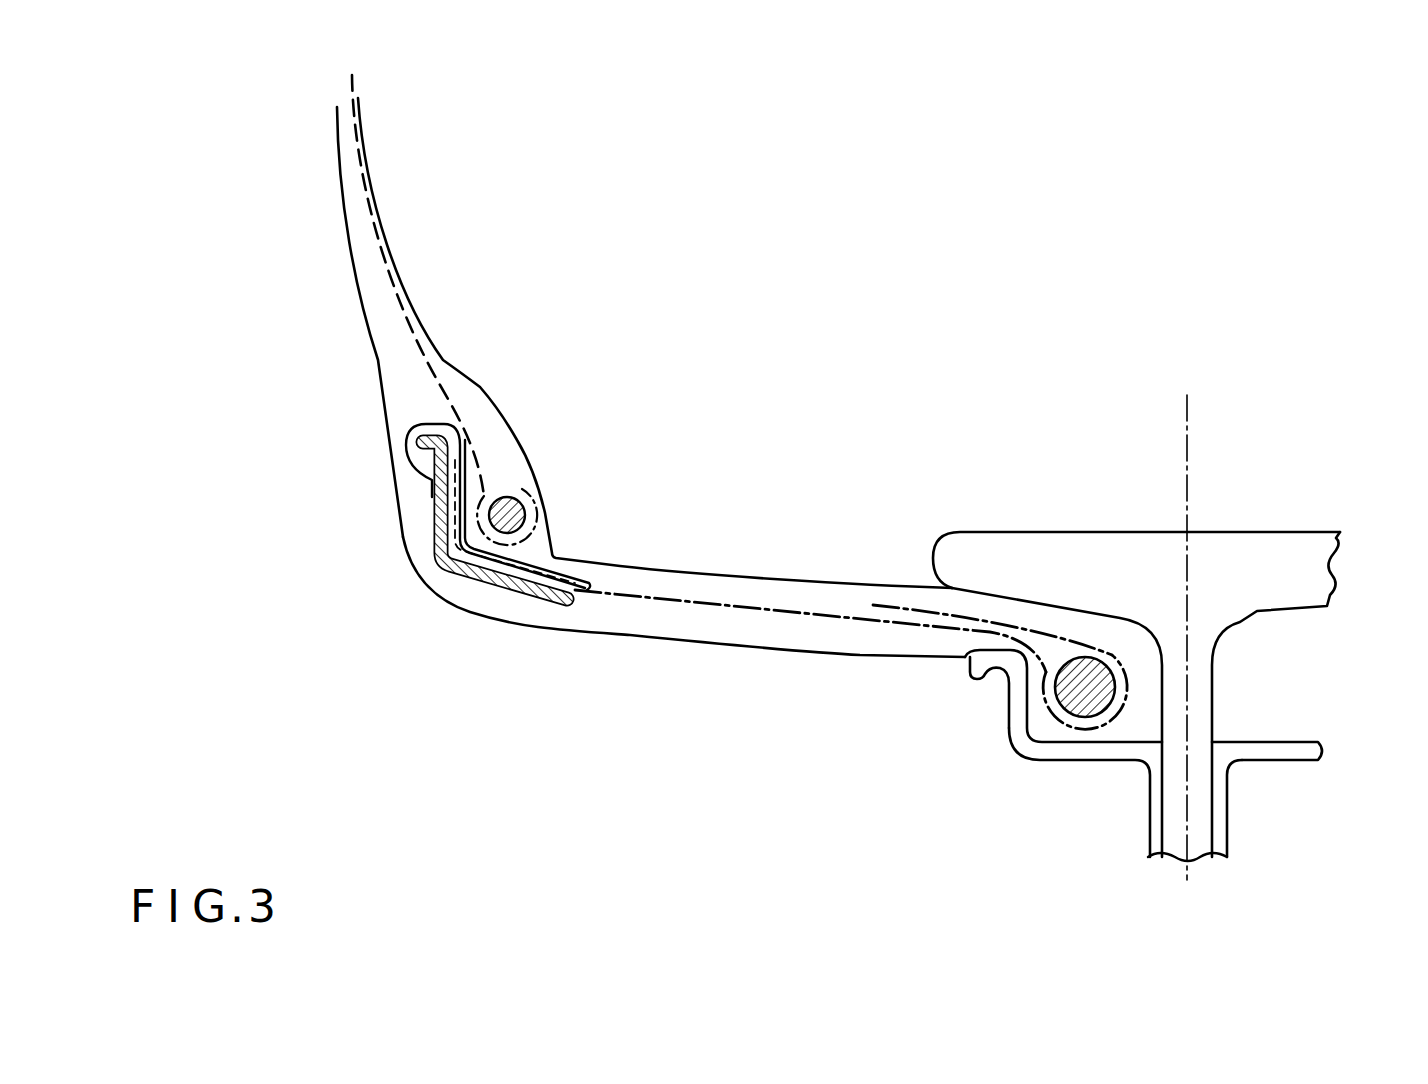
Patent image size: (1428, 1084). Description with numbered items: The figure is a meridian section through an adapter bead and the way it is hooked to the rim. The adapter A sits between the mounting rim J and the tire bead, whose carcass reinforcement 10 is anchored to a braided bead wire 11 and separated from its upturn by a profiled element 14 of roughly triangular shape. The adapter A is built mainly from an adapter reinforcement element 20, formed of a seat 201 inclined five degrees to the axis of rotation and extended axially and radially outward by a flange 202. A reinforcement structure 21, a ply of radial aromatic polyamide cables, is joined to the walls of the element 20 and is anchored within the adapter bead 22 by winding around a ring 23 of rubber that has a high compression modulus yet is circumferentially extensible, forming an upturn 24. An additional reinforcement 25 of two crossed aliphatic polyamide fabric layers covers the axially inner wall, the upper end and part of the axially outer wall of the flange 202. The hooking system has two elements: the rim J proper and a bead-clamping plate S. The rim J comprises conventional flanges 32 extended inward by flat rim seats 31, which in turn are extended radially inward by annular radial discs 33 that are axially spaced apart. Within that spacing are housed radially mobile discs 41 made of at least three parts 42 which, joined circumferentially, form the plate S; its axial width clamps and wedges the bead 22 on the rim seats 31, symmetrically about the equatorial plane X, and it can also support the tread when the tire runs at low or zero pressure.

The carcass reinforcement 10 is at (378, 230).
The profiled element 14 is at (503, 462).
The bead wire 11 is at (527, 503).
The additional reinforcement 25 is at (415, 432).
The flange 202 is at (435, 507).
The adapter reinforcement element 20 is at (457, 576).
The seat 201 is at (528, 600).
The reinforcement structure 21 is at (742, 608).
The adapter A is at (800, 597).
The upturn 24 is at (907, 607).
The adapter bead 22 is at (1137, 645).
The ring 23 is at (1113, 692).
The part 42 is at (1118, 553).
The bead-clamping plate S is at (1257, 557).
The equatorial plane X is at (1206, 649).
The mounting rim J is at (1273, 750).
The rim flange 32 is at (1013, 693).
The rim seat 31 is at (1090, 750).
The radial disc 33 is at (1153, 808).
The radially mobile disc 41 is at (1187, 777).